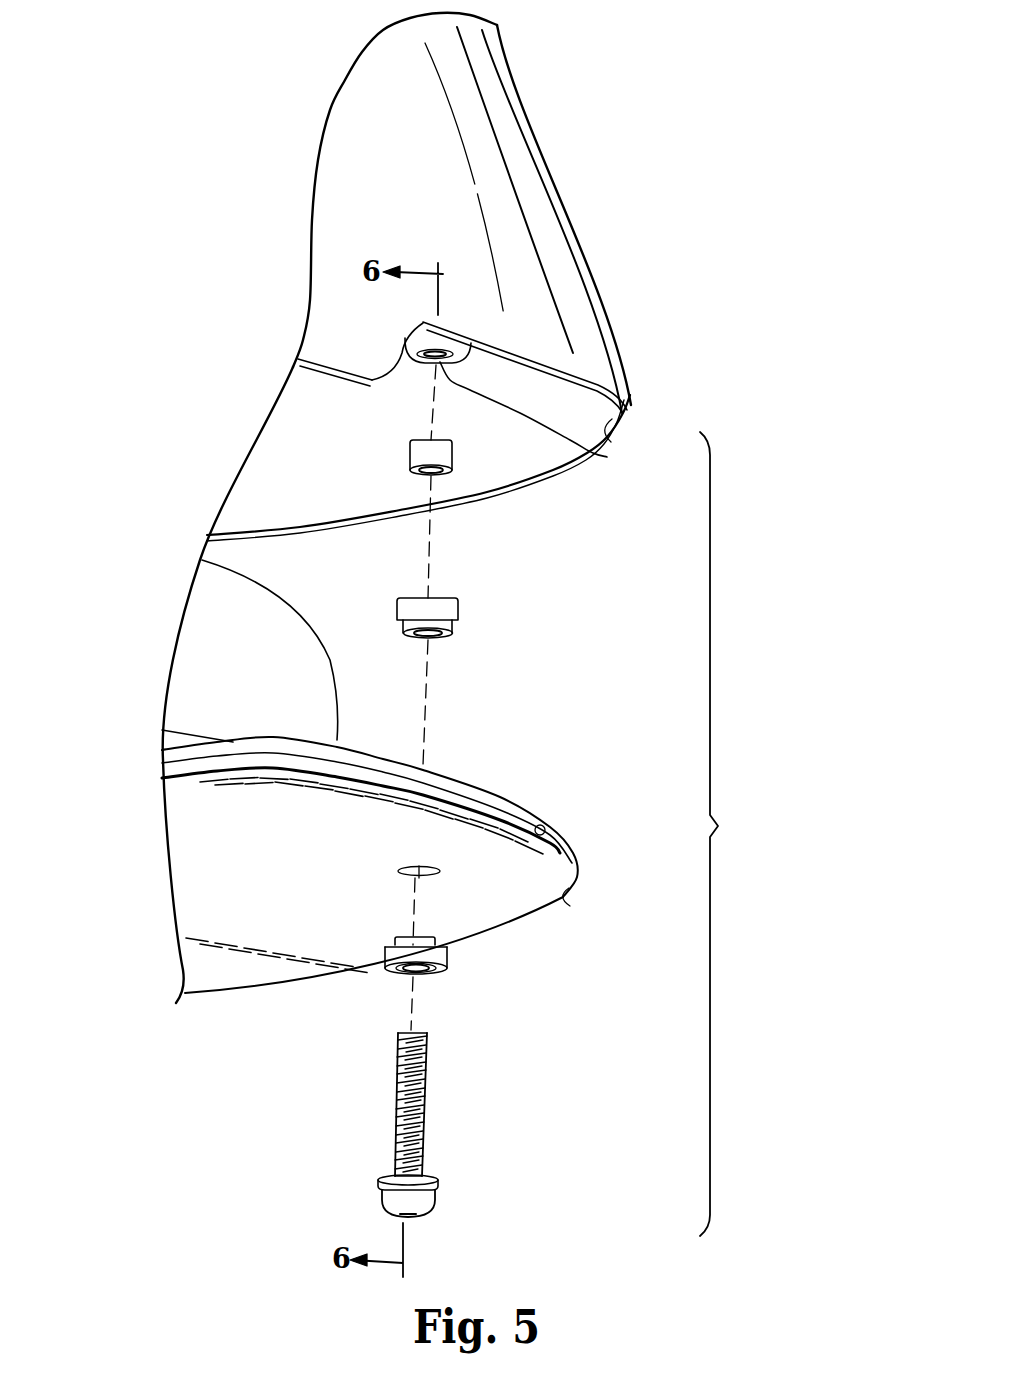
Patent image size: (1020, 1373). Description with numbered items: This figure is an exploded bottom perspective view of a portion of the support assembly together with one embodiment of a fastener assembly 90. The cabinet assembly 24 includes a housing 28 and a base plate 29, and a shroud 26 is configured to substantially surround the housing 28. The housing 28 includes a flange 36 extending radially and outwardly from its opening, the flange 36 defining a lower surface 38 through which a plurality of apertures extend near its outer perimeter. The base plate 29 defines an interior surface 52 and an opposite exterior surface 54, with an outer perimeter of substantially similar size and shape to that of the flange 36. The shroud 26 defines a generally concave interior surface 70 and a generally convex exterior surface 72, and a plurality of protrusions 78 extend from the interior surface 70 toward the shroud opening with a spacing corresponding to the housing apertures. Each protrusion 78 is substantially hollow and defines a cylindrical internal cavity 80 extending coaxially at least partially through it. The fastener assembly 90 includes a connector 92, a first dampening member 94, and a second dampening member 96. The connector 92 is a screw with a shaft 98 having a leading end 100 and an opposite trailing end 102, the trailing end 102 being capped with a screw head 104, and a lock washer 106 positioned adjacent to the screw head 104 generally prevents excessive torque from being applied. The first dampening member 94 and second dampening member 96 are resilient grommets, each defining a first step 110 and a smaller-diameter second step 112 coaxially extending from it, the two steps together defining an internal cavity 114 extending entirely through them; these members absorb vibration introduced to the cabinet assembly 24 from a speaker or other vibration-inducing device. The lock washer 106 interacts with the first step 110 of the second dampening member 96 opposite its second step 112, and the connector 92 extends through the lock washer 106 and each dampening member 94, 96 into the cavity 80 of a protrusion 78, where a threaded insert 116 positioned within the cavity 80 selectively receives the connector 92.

The cabinet assembly 24 is at (547, 700).
The shroud 26 is at (530, 148).
The housing 28 is at (207, 645).
The base plate 29 is at (560, 897).
The flange 36 is at (510, 793).
The lower surface 38 is at (543, 828).
The interior surface 52 is at (560, 836).
The exterior surface 54 is at (240, 972).
The interior surface 70 is at (607, 440).
The exterior surface 72 is at (612, 347).
The protrusion 78 is at (448, 330).
The internal cavity 80 is at (598, 447).
The fastener assembly 90 is at (725, 834).
The connector 92 is at (425, 1103).
The first dampening member 94 is at (457, 607).
The second dampening member 96 is at (442, 960).
The shaft 98 is at (402, 1078).
The leading end 100 is at (423, 1033).
The trailing end 102 is at (423, 1158).
The screw head 104 is at (418, 1200).
The lock washer 106 is at (437, 1190).
The first step 110 is at (433, 603).
The second step 112 is at (448, 630).
The internal cavity 114 is at (428, 637).
The threaded insert 116 is at (445, 457).